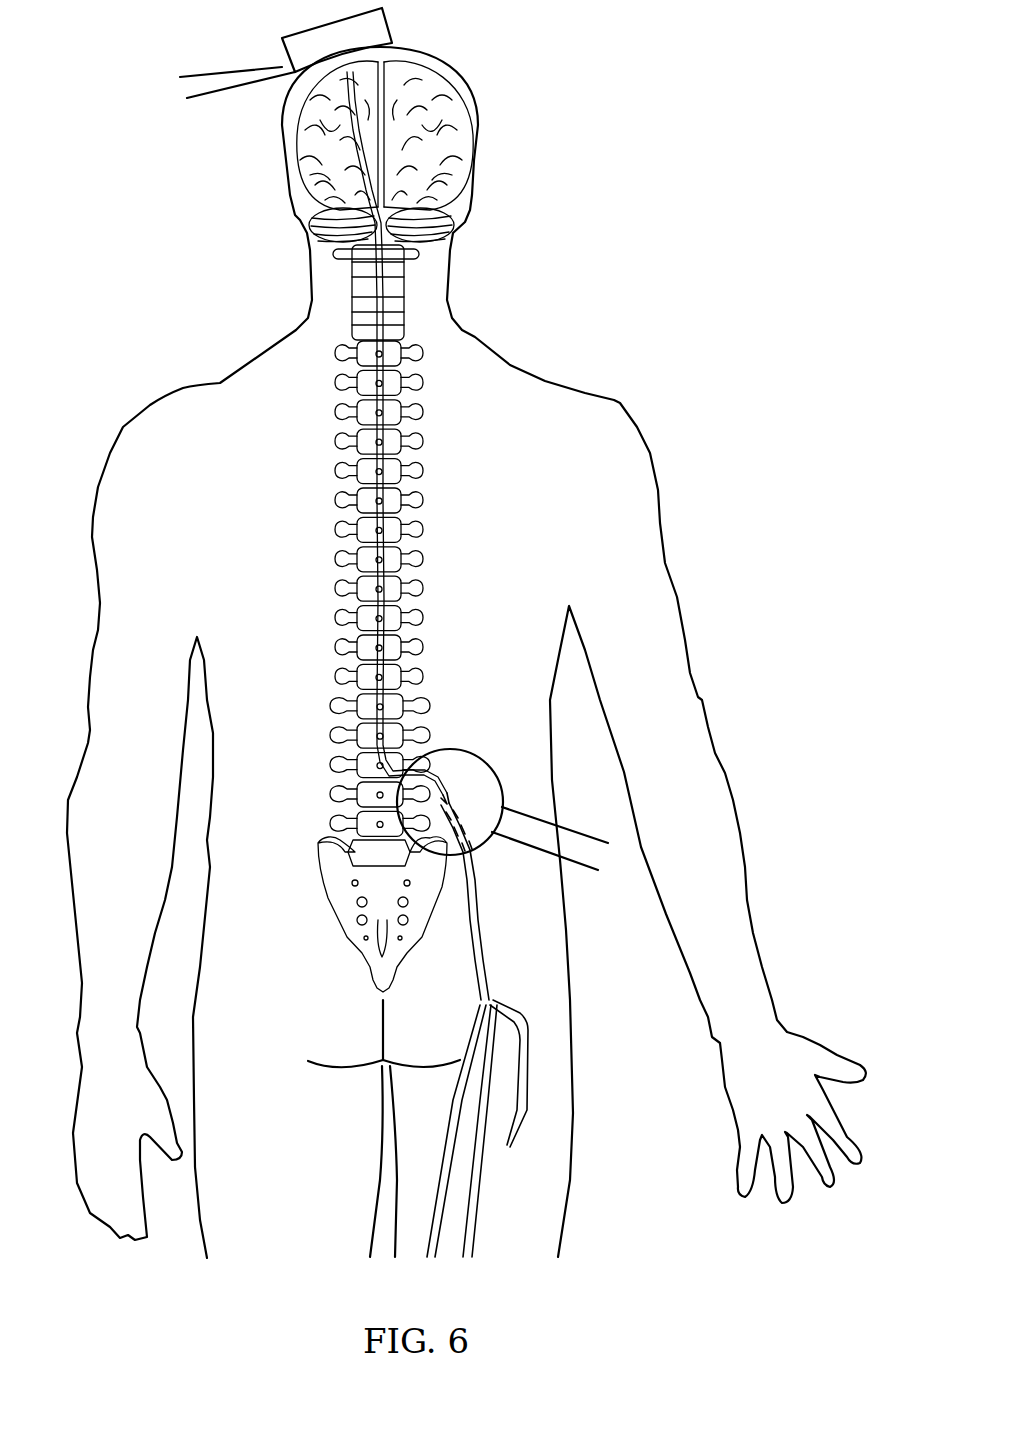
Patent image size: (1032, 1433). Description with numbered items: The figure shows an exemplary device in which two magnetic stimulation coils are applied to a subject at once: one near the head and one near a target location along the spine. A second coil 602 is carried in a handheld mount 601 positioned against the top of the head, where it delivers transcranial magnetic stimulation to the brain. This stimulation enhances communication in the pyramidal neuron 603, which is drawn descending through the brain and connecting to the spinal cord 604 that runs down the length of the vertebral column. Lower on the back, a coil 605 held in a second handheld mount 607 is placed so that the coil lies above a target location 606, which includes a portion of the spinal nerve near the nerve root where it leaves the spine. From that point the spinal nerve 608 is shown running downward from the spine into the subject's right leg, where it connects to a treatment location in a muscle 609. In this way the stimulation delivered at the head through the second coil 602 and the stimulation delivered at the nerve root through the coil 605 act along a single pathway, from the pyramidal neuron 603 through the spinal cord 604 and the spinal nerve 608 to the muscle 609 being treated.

The handheld mount 601 is at (282, 57).
The second coil 602 is at (392, 38).
The pyramidal neuron 603 is at (350, 97).
The spinal cord 604 is at (380, 293).
The coil 605 is at (477, 750).
The target location 606 is at (452, 807).
The handheld mount 607 is at (580, 828).
The spinal nerve 608 is at (483, 947).
The muscle 609 is at (497, 1153).